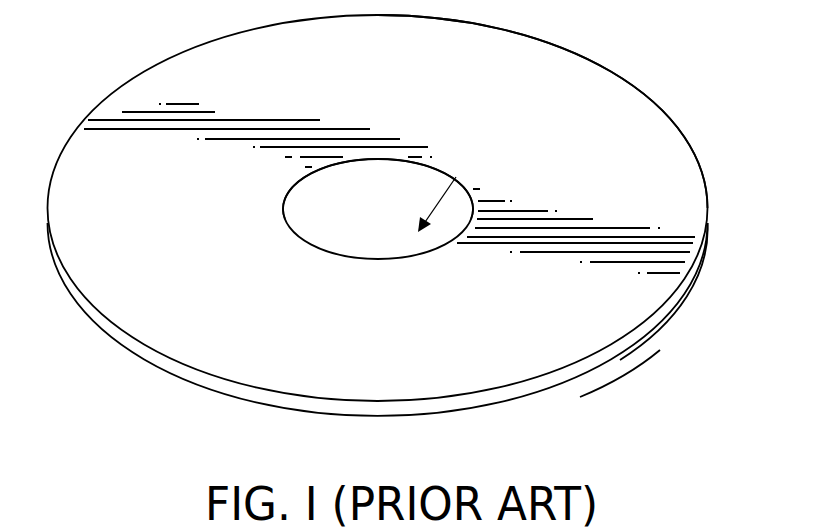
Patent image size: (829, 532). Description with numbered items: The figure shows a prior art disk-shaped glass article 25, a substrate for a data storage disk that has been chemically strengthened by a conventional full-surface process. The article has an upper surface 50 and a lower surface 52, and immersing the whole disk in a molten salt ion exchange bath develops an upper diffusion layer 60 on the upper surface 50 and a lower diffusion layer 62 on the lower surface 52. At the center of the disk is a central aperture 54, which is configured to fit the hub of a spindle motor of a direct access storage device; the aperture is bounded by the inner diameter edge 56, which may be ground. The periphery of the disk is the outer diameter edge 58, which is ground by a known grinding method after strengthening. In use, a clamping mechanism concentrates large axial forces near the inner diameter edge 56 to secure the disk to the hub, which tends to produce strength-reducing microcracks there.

The disk-shaped glass article 25 is at (186, 50).
The upper surface 50 is at (522, 91).
The lower surface 52 is at (690, 296).
The central aperture 54 is at (456, 177).
The inner diameter edge 56 is at (352, 178).
The outer diameter edge 58 is at (424, 410).
The upper diffusion layer 60 is at (622, 96).
The lower diffusion layer 62 is at (645, 345).